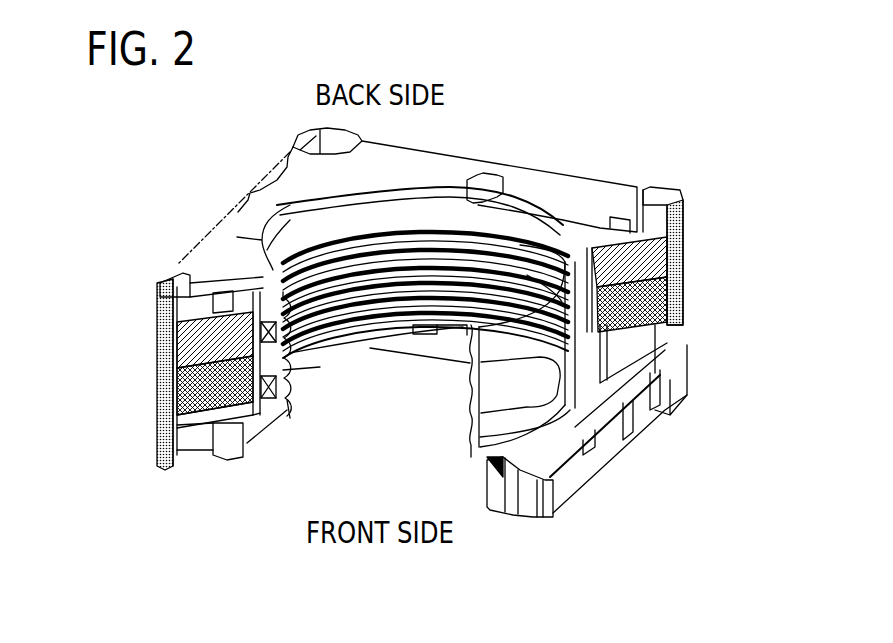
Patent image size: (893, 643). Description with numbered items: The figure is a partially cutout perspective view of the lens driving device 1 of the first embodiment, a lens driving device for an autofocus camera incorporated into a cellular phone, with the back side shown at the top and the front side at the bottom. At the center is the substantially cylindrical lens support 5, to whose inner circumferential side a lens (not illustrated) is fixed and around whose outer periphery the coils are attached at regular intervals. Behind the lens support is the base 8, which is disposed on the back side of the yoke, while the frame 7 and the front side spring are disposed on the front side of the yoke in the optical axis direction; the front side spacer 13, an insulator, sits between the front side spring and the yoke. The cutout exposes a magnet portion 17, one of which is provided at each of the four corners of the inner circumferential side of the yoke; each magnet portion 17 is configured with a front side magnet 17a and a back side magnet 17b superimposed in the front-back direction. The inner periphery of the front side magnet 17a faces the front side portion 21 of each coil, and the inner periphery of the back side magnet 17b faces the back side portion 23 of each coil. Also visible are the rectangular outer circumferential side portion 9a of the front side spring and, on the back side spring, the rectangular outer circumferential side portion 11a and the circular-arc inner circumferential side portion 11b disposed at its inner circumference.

The lens driving device 1 is at (480, 99).
The lens support 5 is at (500, 223).
The frame 7 is at (235, 443).
The base 8 is at (592, 200).
The outer circumferential side portion 9a is at (202, 447).
The outer circumferential side portion 11a is at (177, 273).
The inner circumferential side portion 11b is at (262, 282).
The front side spacer 13 is at (510, 513).
The magnet portion 17 is at (65, 272).
The front side magnet 17a is at (160, 378).
The back side magnet 17b is at (160, 330).
The front side portion 21 is at (287, 400).
The back side portion 23 is at (287, 352).